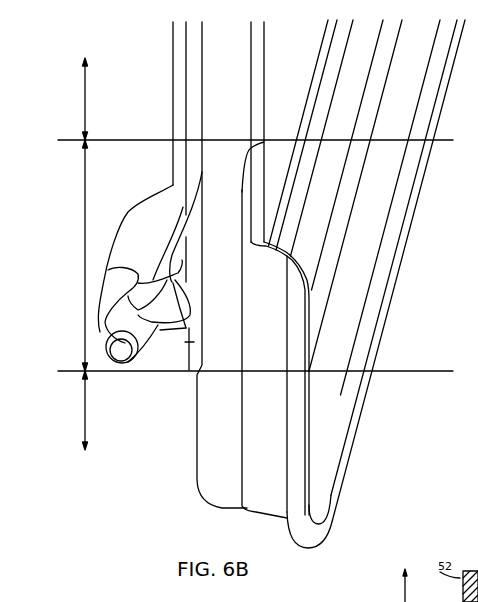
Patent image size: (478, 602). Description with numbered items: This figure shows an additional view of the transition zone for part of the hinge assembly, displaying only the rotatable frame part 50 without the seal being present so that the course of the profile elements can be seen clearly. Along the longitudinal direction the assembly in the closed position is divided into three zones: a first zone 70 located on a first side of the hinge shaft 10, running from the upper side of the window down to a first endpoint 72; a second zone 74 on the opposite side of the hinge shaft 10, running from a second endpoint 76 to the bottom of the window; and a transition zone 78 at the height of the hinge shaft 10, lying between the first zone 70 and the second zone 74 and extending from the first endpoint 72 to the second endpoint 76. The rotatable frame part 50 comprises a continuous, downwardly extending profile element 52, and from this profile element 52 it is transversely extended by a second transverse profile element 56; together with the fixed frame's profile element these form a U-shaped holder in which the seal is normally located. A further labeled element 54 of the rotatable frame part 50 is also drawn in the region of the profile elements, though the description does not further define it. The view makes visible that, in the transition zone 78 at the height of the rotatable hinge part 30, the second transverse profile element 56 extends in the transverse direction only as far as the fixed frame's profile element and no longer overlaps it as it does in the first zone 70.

The hinge shaft 10 is at (110, 347).
The rotatable hinge part 30 is at (122, 234).
The rotatable frame part 50 is at (197, 403).
The profile element 52 is at (212, 429).
The flap 54 is at (251, 190).
The second transverse profile element 56 is at (177, 115).
The first zone 70 is at (85, 100).
The first endpoint 72 is at (63, 141).
The second zone 74 is at (85, 425).
The second endpoint 76 is at (66, 373).
The transition zone 78 is at (85, 237).